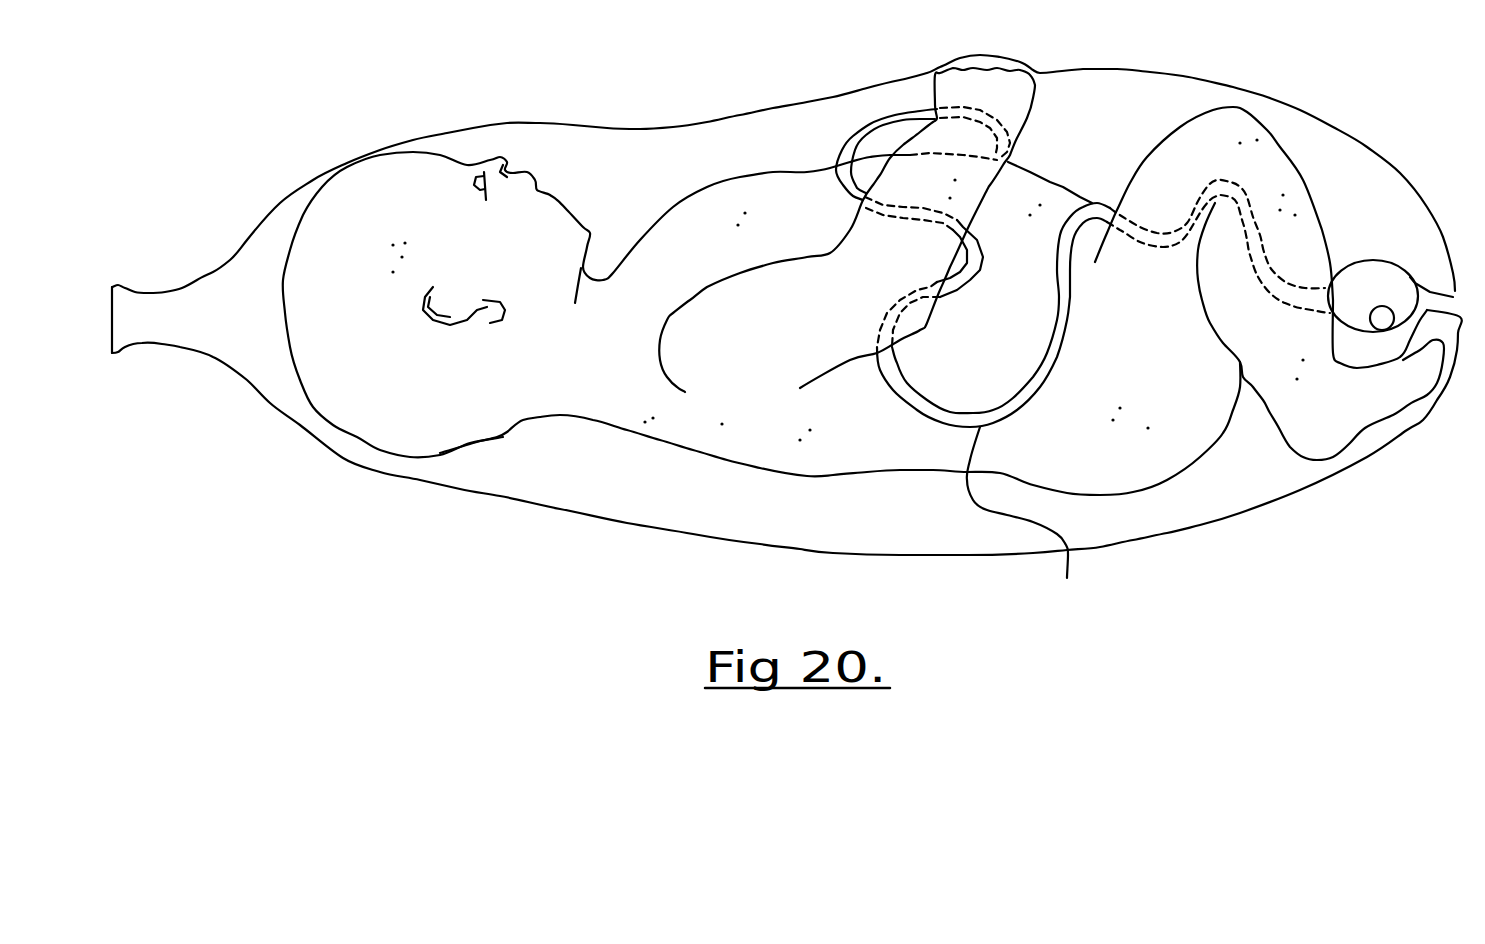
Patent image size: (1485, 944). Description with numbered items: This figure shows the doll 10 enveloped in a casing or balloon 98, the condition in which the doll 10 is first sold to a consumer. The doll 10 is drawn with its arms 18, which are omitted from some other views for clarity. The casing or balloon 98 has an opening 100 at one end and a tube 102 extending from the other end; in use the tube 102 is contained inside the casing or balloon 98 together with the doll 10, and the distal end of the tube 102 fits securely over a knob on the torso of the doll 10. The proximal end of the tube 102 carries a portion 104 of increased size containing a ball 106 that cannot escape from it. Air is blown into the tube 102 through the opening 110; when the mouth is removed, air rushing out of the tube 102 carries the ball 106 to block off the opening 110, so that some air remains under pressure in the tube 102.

The doll 10 is at (596, 346).
The arms 18 is at (942, 344).
The casing or balloon 98 is at (787, 298).
The opening 100 is at (126, 285).
The tube 102 is at (1068, 550).
The portion of increased size 104 is at (1384, 230).
The ball 106 is at (1406, 401).
The opening 110 is at (1439, 241).